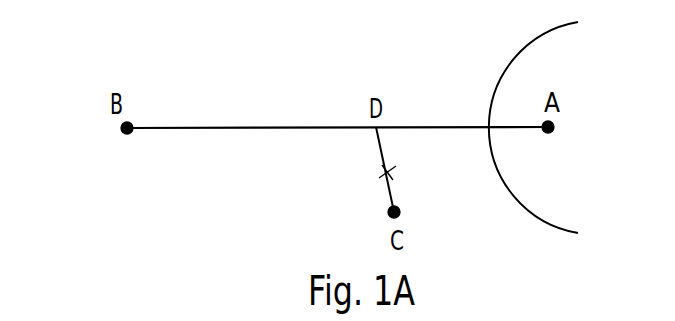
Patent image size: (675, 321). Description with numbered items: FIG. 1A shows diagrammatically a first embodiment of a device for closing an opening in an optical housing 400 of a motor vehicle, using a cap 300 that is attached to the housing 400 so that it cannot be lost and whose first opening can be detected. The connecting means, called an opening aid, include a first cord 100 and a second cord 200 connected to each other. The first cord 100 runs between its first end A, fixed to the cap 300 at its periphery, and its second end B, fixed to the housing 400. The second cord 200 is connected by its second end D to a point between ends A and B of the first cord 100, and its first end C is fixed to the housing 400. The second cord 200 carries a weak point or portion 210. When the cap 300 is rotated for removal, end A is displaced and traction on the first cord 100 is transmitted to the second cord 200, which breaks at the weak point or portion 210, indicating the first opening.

The first cord 100 is at (242, 127).
The second cord 200 is at (390, 193).
The weak point or portion 210 is at (395, 170).
The cap 300 is at (612, 172).
The optical housing 400 is at (98, 195).